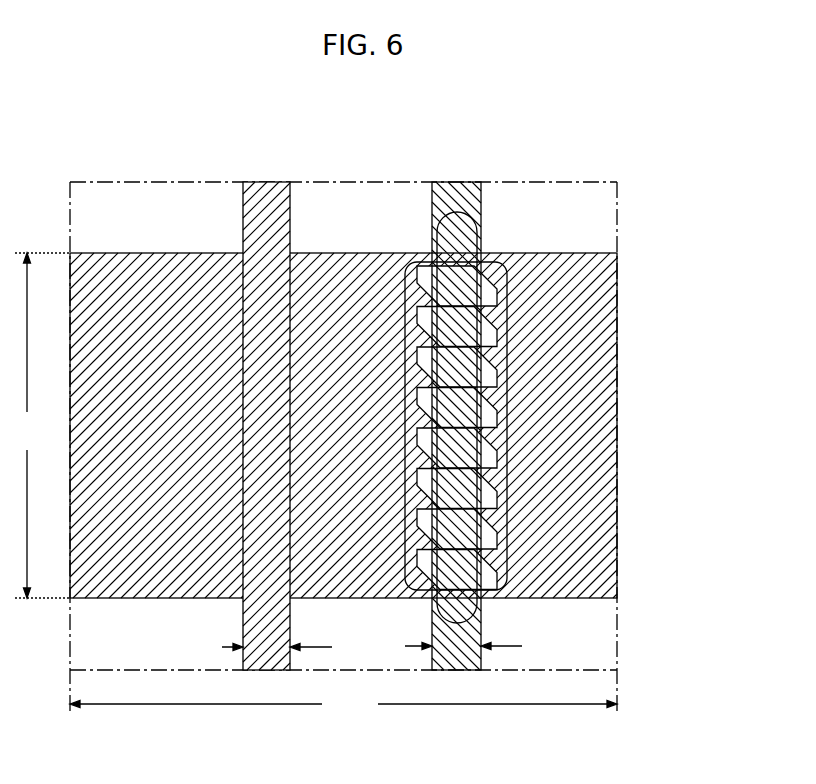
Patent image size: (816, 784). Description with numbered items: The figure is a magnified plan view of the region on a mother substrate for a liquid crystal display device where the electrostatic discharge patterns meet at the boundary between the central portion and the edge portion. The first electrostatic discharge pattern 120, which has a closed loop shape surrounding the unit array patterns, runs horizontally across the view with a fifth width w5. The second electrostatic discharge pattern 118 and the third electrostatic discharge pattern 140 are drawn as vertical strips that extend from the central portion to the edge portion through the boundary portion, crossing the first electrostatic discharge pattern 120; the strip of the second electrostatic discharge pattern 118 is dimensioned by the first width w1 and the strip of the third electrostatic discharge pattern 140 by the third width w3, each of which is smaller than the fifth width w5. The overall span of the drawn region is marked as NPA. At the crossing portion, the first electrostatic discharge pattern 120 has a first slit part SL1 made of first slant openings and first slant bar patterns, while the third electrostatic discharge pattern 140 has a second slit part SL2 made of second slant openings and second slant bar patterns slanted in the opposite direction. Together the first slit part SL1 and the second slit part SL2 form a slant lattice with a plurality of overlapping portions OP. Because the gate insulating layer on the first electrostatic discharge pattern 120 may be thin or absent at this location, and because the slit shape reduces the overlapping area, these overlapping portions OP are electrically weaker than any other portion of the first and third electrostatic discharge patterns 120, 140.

The second electrostatic discharge pattern 118 is at (262, 182).
The first electrostatic discharge pattern 120 is at (582, 393).
The third electrostatic discharge pattern 140 is at (470, 196).
The first slit part SL1 is at (402, 282).
The second slit part SL2 is at (457, 204).
The overlapping portions OP is at (493, 298).
The first width w1 is at (277, 637).
The third width w3 is at (464, 636).
The fifth width w5 is at (42, 425).
The non-pixel area NPA is at (343, 705).